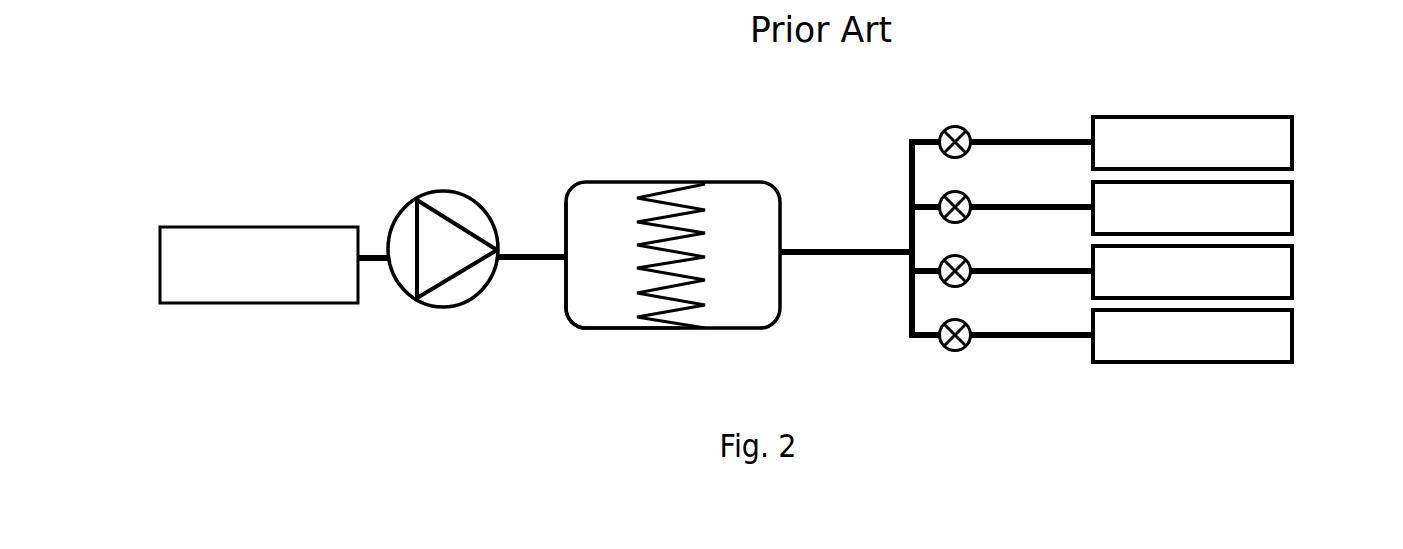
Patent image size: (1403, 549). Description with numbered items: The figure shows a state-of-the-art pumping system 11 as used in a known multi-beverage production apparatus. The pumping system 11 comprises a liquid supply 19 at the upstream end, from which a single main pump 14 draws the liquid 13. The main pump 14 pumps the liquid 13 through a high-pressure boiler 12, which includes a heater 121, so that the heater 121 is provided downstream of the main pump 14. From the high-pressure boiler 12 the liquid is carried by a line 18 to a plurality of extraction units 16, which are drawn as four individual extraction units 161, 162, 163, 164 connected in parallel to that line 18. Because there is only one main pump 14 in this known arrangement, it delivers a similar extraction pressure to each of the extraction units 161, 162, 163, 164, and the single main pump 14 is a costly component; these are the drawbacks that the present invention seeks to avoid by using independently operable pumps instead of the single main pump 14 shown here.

The pumping system 11 is at (517, 144).
The high-pressure boiler 12 is at (745, 178).
The heater 121 is at (640, 197).
The liquid 13 is at (588, 313).
The main pump 14 is at (452, 302).
The extraction units 16 is at (1219, 229).
The extraction unit 161 is at (1192, 143).
The extraction unit 162 is at (1192, 208).
The extraction unit 163 is at (1192, 272).
The extraction unit 164 is at (1192, 336).
The supply line / manifold 18 is at (862, 257).
The liquid supply 19 is at (197, 245).